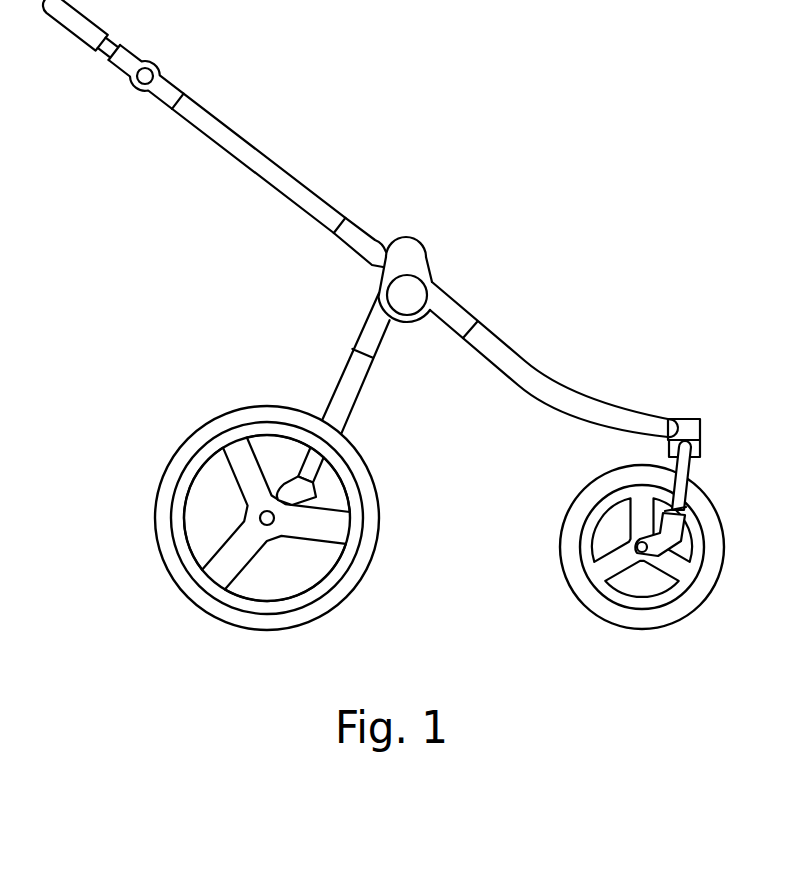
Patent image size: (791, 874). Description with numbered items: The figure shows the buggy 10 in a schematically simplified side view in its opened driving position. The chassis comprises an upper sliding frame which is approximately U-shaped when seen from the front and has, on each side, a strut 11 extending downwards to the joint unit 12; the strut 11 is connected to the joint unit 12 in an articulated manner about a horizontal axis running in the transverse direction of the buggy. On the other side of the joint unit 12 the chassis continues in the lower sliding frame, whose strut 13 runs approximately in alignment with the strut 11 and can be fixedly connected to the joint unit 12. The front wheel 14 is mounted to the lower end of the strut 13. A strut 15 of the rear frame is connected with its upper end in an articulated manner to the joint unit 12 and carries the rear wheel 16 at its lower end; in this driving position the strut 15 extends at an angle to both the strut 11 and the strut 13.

The buggy 10 is at (417, 194).
The strut of the upper sliding frame 11 is at (202, 137).
The joint unit 12 is at (424, 258).
The strut of the lower sliding frame 13 is at (517, 340).
The front wheel 14 is at (576, 505).
The strut of the rear frame 15 is at (337, 389).
The rear wheel 16 is at (198, 433).